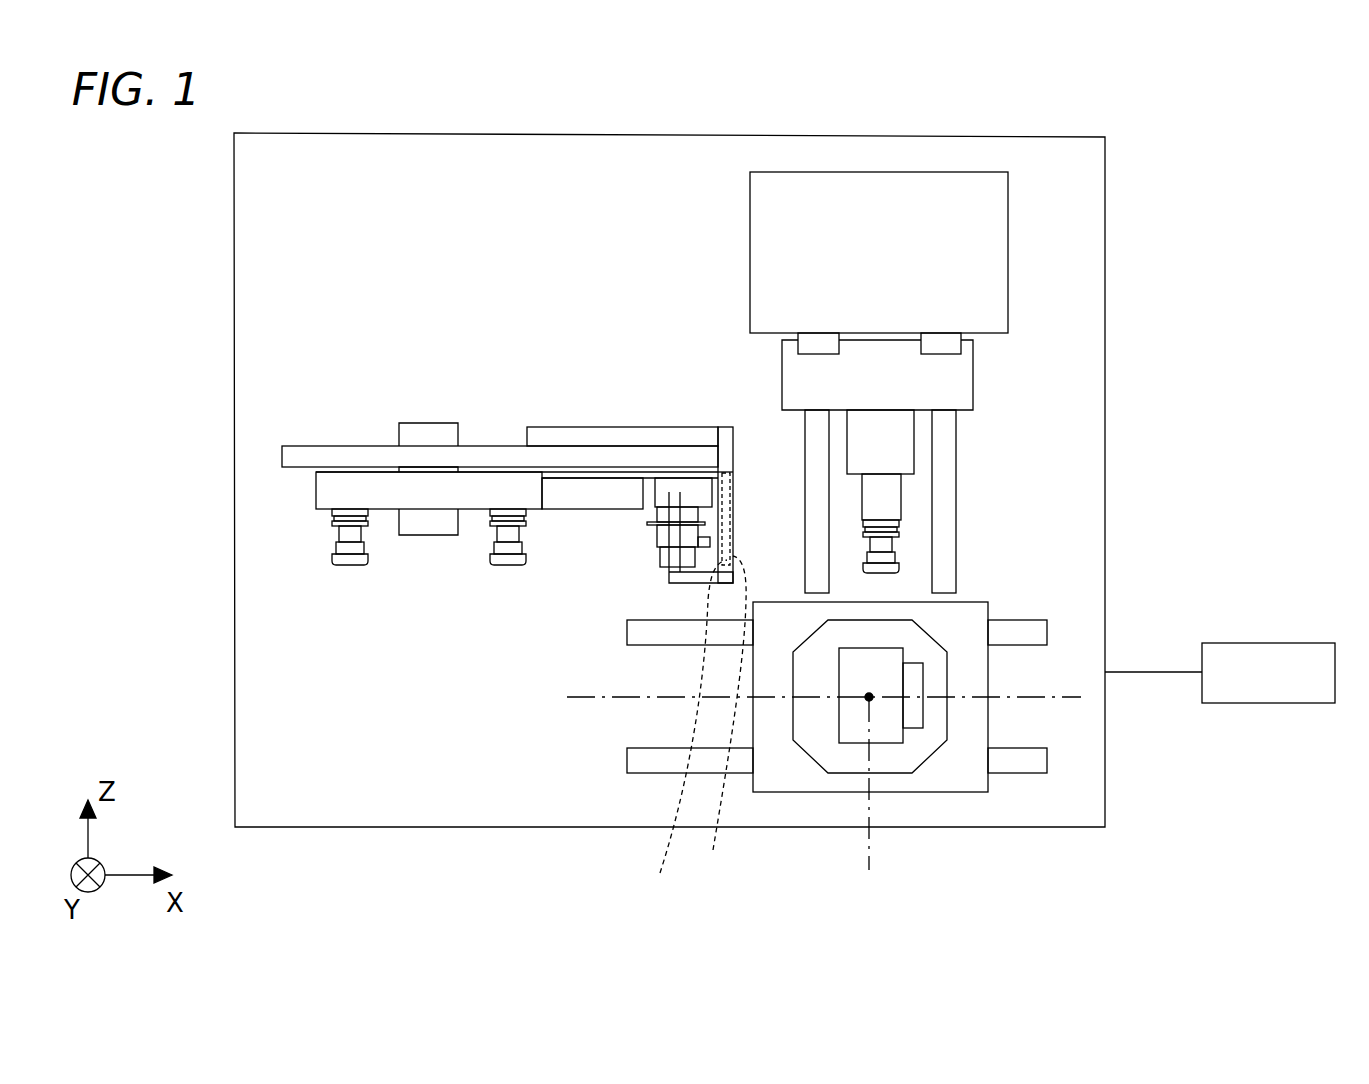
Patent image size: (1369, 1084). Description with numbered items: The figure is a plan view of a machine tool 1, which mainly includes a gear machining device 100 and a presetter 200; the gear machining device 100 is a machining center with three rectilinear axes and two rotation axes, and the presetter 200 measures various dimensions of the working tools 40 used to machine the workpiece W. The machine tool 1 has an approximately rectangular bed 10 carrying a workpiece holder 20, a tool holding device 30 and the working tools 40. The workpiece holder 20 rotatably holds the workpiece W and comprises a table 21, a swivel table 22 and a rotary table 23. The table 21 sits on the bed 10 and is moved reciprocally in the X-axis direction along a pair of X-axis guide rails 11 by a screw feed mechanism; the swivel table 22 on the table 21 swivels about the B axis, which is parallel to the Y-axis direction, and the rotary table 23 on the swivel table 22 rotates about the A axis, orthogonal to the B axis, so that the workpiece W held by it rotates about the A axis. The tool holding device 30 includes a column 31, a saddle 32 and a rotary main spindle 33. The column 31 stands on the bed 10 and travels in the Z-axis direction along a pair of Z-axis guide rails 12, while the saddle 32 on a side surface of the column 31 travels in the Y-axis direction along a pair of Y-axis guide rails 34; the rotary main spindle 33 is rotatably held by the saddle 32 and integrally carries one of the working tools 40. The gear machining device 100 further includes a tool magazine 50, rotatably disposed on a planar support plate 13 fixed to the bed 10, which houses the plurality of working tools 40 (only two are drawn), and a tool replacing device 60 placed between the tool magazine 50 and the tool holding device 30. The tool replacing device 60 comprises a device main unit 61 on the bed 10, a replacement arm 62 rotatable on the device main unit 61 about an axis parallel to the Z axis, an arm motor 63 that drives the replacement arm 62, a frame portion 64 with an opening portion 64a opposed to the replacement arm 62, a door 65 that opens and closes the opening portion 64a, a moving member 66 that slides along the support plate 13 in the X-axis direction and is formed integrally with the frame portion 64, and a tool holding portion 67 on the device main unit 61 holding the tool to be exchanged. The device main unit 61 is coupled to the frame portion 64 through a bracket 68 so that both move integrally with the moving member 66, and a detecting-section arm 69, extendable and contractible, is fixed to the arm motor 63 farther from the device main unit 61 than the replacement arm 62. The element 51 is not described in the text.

The machine tool 1 is at (1248, 809).
The bed 10 is at (257, 180).
The X-axis guide rails 11 is at (1070, 780).
The Z-axis guide rails 12 is at (966, 508).
The support plate 13 is at (325, 452).
The workpiece holder 20 is at (859, 766).
The table 21 is at (962, 787).
The swivel table 22 is at (808, 743).
The rotary table 23 is at (857, 723).
The tool holding device 30 is at (978, 339).
The column 31 is at (996, 272).
The saddle 32 is at (960, 375).
The rotary main spindle 33 is at (902, 449).
The Y-axis guide rails 34 is at (818, 340).
The working tools 40 is at (492, 540).
The tool magazine 50 is at (332, 490).
The tool holding portion 51 is at (328, 515).
The tool replacing device 60 is at (537, 495).
The device main unit 61 is at (695, 487).
The replacement arm 62 is at (655, 517).
The arm motor 63 is at (663, 560).
The frame portion 64 is at (728, 432).
The opening portion 64a is at (718, 716).
The door 65 is at (680, 732).
The moving member 66 is at (600, 430).
The tool holding portion 67 is at (583, 497).
The bracket 68 is at (673, 500).
The detecting-section arm 69 is at (663, 540).
The gear machining device 100 is at (1167, 179).
The presetter 200 is at (1297, 643).
The A axis A is at (1068, 699).
The B axis B is at (862, 799).
The workpiece W is at (915, 718).